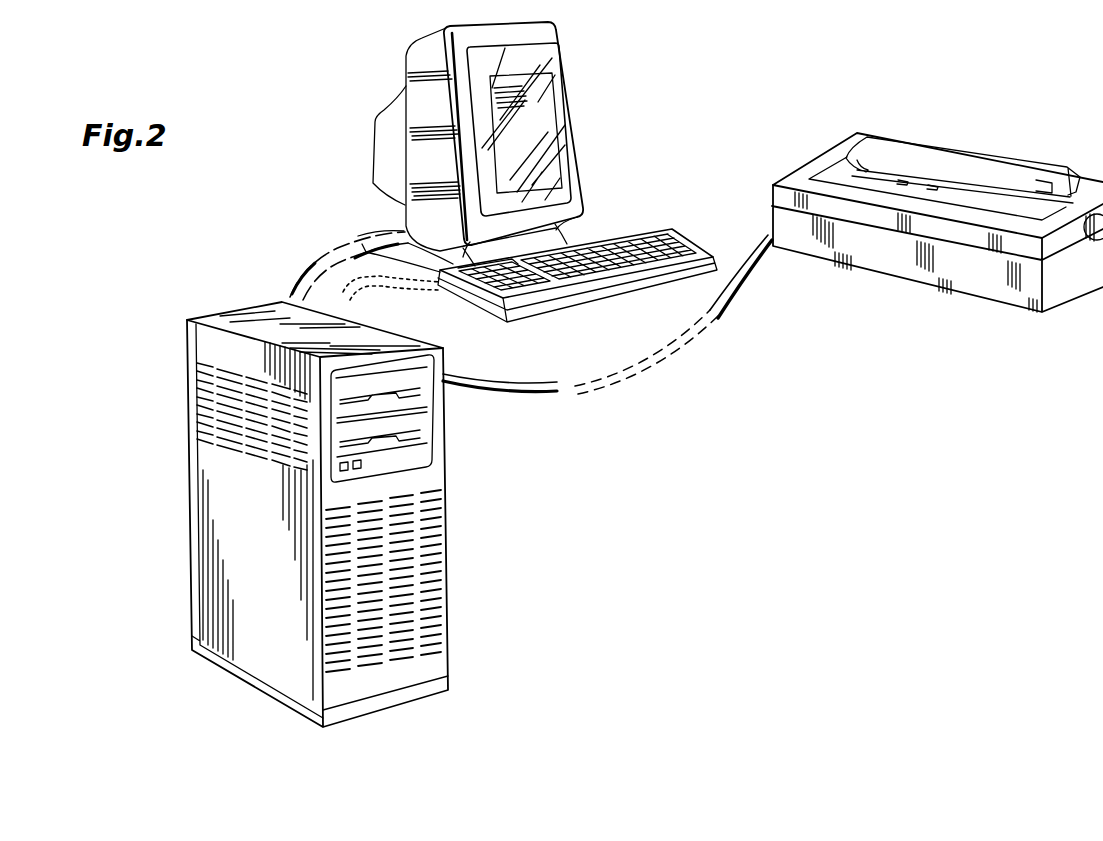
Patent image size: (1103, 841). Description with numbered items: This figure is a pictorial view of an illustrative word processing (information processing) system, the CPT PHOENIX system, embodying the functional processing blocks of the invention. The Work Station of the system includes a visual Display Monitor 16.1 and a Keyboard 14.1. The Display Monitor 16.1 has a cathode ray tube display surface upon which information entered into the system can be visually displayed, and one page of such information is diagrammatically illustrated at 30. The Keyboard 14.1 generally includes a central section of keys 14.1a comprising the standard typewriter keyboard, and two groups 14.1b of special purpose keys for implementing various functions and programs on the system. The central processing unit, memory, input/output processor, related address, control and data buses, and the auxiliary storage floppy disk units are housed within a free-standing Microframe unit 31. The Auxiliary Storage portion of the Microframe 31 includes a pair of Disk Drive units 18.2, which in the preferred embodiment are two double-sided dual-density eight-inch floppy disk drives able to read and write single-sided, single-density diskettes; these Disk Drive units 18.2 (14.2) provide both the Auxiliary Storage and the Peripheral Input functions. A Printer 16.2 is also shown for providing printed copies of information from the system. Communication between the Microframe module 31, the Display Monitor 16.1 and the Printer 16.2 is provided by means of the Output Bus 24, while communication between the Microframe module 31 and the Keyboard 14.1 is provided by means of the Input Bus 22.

The Display Monitor 16.1 is at (376, 120).
The page of information 30 is at (556, 92).
The Keyboard 14.1 is at (570, 304).
The central section of keys 14.1a is at (596, 238).
The groups of special purpose keys 14.1b is at (486, 278).
The Input Bus 22 is at (354, 284).
The Output Bus 24 is at (372, 242).
The Microframe unit 31 is at (204, 466).
The Disk Drive units 18.2 is at (422, 407).
The Disk Drive units (Peripheral Input) 14.2 is at (382, 441).
The Printer 16.2 is at (943, 156).